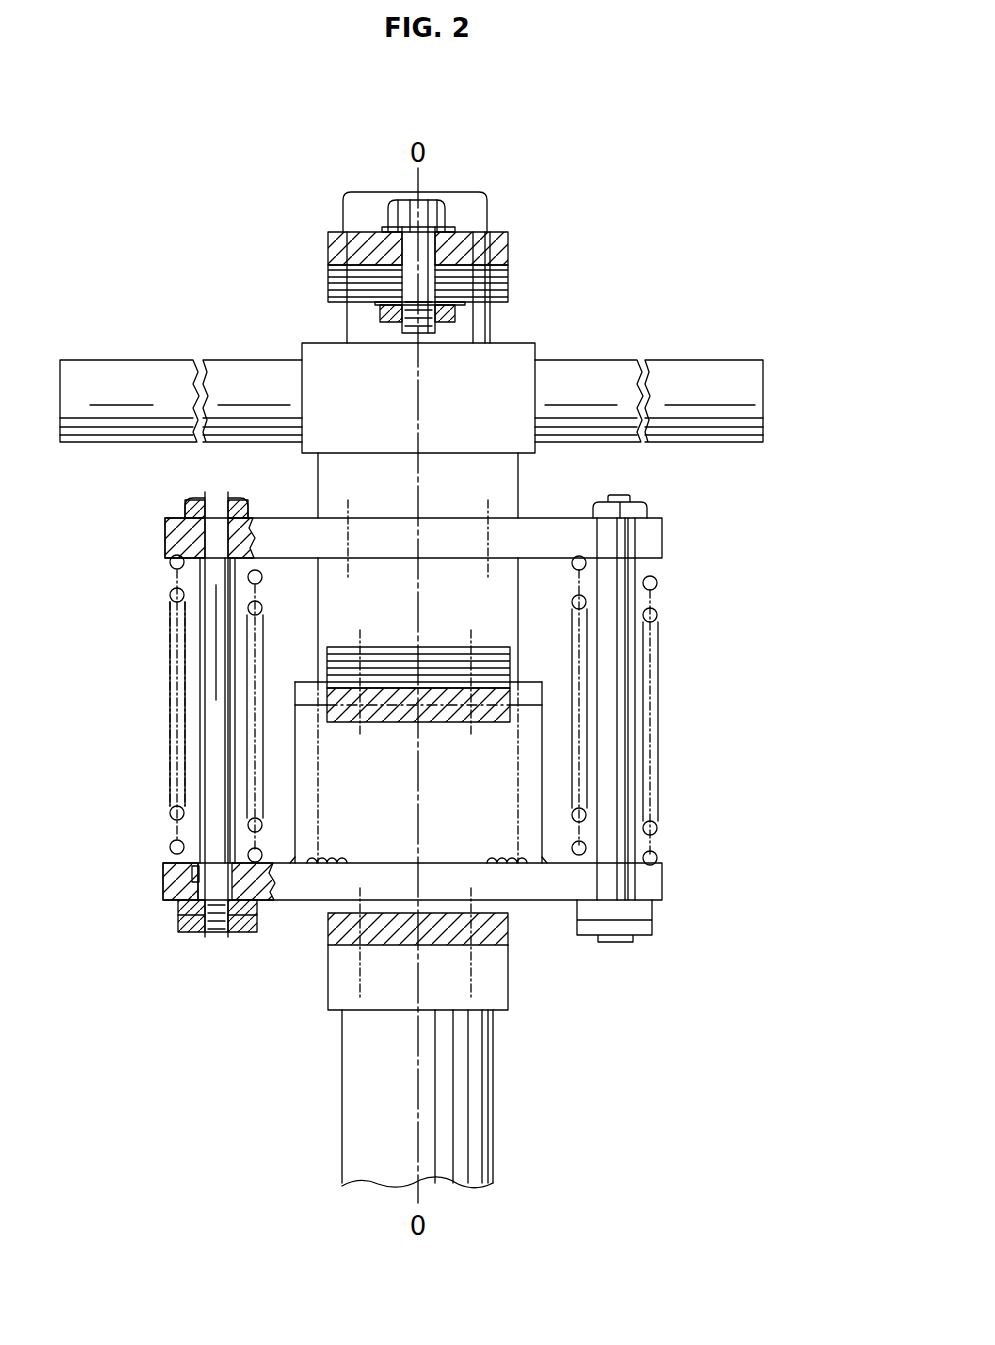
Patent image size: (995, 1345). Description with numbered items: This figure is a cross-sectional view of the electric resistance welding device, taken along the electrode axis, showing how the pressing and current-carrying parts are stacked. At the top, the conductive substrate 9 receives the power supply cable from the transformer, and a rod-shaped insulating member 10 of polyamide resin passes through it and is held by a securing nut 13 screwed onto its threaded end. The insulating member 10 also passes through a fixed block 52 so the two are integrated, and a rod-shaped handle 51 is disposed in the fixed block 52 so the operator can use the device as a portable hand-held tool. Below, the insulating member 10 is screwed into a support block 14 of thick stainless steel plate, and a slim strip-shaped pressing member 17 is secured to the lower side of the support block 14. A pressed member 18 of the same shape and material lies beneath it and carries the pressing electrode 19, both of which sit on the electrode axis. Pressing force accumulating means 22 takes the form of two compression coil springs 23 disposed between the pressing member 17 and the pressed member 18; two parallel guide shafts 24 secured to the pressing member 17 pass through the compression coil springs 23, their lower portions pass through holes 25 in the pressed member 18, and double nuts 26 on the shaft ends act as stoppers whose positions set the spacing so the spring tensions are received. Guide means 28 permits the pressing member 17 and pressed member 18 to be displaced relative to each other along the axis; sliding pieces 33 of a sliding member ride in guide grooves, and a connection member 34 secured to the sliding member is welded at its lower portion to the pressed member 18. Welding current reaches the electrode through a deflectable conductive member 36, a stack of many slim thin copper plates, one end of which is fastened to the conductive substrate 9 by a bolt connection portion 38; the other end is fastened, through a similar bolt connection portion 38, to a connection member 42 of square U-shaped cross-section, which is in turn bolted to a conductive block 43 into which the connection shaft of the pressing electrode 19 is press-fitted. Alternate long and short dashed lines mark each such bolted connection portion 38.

The conductive substrate 9 is at (505, 241).
The insulating member 10 is at (491, 330).
The securing nut 13 is at (478, 197).
The support block 14 is at (519, 480).
The pressing member 17 is at (663, 546).
The pressed member 18 is at (662, 886).
The pressing electrode 19 is at (342, 1081).
The pressing force accumulating means 22 is at (158, 743).
The compression coil springs 23 is at (170, 596).
The guide shafts 24 is at (200, 652).
The holes 25 is at (200, 860).
The double nuts 26 is at (178, 928).
The guide means 28 is at (522, 628).
The sliding pieces 33 is at (305, 688).
The connection member 34 is at (542, 778).
The conductive member 36 is at (508, 289).
The bolt connection portion 38 is at (424, 184).
The connection member 42 is at (378, 724).
The conductive block 43 is at (500, 960).
The handle 51 is at (153, 360).
The fixed block 52 is at (318, 343).